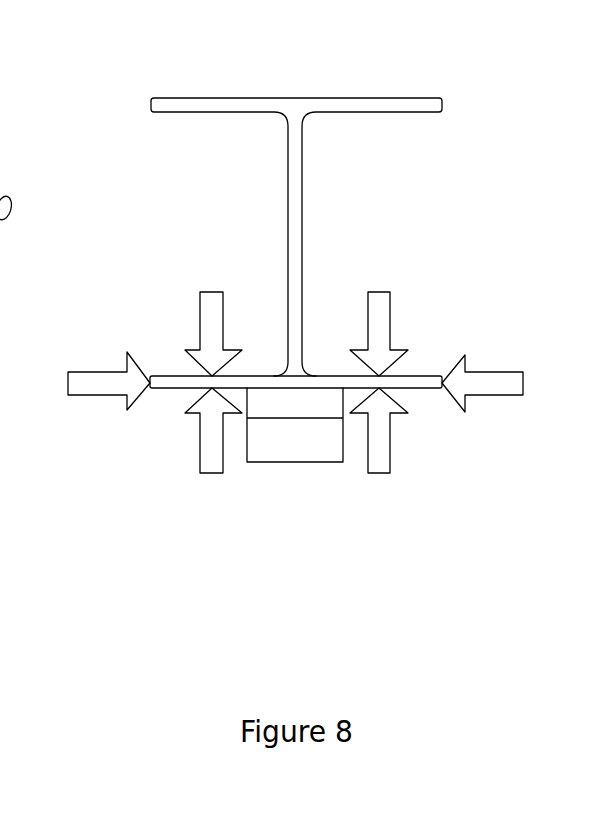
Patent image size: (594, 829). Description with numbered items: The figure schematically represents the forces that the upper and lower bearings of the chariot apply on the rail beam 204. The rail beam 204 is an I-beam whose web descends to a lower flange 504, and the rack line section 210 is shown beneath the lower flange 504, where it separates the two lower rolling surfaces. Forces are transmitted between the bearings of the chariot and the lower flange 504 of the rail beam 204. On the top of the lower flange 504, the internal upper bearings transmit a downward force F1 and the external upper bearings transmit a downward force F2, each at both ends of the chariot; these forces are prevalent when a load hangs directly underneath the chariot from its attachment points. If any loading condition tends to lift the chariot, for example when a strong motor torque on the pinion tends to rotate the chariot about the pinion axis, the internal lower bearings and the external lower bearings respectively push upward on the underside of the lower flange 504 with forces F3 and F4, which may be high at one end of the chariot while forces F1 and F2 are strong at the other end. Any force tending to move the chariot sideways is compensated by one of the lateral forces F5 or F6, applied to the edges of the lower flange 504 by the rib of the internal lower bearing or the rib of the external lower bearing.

The rail beam 204 is at (370, 102).
The lower flange 504 is at (412, 387).
The rack line section 210 is at (290, 448).
The force F1 is at (213, 317).
The force F2 is at (379, 317).
The force F3 is at (213, 459).
The force F4 is at (379, 454).
The force F5 is at (88, 381).
The force F6 is at (503, 383).